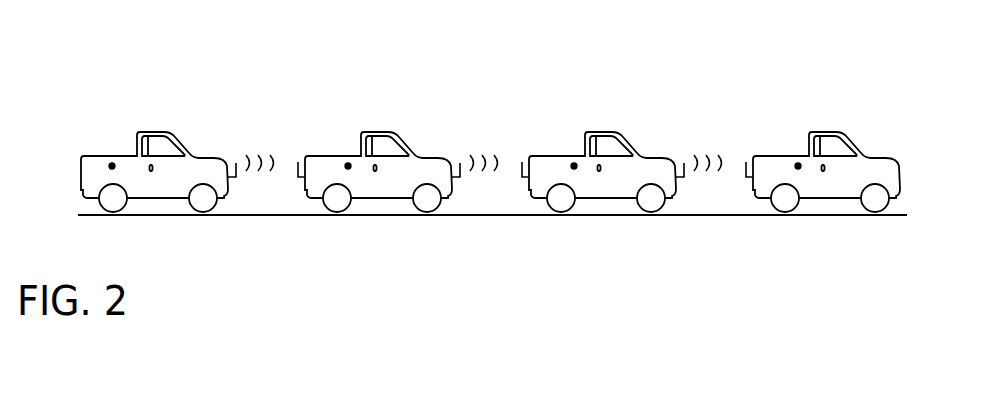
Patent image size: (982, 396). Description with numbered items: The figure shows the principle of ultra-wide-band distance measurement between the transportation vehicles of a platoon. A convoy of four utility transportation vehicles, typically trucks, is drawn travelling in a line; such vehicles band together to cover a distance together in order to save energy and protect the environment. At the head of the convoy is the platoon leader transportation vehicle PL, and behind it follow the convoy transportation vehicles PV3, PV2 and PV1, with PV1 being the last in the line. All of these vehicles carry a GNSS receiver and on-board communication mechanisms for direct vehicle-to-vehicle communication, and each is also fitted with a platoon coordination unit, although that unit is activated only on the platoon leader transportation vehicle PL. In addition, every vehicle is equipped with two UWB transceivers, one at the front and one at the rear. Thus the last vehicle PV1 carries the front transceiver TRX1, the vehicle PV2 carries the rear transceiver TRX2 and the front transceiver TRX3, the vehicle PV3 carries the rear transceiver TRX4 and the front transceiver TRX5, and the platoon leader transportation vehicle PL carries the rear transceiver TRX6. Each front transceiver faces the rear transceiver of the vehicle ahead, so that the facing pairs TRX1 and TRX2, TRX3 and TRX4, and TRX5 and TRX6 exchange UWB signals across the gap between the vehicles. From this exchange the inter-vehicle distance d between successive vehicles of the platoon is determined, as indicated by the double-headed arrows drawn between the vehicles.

The following convoy transportation vehicle PV1 is at (112, 165).
The following convoy transportation vehicle PV2 is at (348, 165).
The following convoy transportation vehicle PV3 is at (574, 165).
The platoon leader transportation vehicle PL is at (798, 165).
The UWB transceiver TRX1 is at (235, 154).
The UWB transceiver TRX2 is at (304, 154).
The UWB transceiver TRX3 is at (459, 154).
The UWB transceiver TRX4 is at (529, 154).
The UWB transceiver TRX5 is at (683, 154).
The UWB transceiver TRX6 is at (753, 154).
The distance d is at (489, 197).